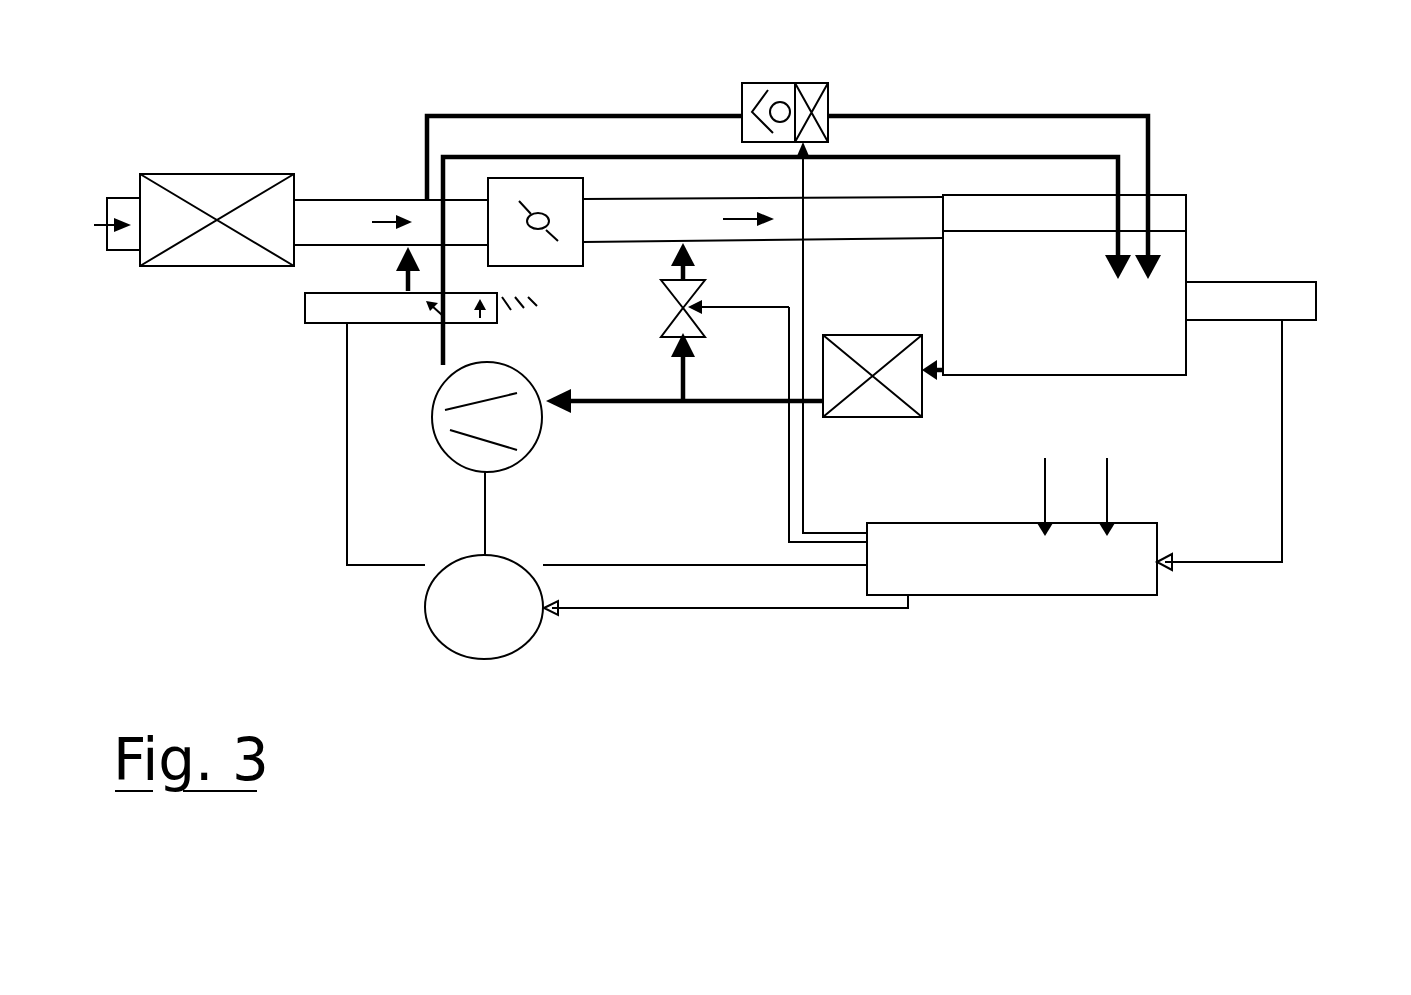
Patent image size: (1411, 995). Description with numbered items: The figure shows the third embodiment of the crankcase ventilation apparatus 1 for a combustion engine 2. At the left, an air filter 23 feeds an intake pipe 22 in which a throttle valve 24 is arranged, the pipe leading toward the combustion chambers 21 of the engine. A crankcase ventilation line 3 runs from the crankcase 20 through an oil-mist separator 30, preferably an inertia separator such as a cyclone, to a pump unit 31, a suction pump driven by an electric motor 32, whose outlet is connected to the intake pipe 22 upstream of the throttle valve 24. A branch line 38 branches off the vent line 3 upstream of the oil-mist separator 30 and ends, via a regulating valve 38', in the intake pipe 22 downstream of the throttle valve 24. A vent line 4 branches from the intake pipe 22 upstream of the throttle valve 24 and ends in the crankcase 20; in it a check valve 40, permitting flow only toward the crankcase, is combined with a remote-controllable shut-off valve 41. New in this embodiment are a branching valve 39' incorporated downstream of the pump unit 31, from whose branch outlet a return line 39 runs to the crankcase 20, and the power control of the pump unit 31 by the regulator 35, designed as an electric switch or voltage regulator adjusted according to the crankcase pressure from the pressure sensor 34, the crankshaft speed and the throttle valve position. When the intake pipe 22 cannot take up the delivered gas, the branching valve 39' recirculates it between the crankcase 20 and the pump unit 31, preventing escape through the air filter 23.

The apparatus 1 is at (247, 499).
The combustion engine 2 is at (1208, 239).
The crankcase ventilation line 3 is at (402, 282).
The vent line 4 is at (624, 114).
The crankcase 20 is at (1168, 347).
The combustion chambers 21 is at (1185, 210).
The intake pipe 22 is at (353, 200).
The air filter 23 is at (216, 172).
The throttle valve 24 is at (528, 212).
The oil-mist separator 30 is at (872, 334).
The pump unit 31 is at (450, 454).
The electric motor 32 is at (428, 604).
The pressure sensor 34 is at (1316, 302).
The regulator 35 is at (945, 540).
The branch line 38 is at (652, 290).
The regulating valve 38' is at (735, 421).
The return line 39 is at (787, 215).
The branching valve 39' is at (544, 428).
The check valve 40 is at (762, 82).
The shut-off valve 41 is at (812, 82).